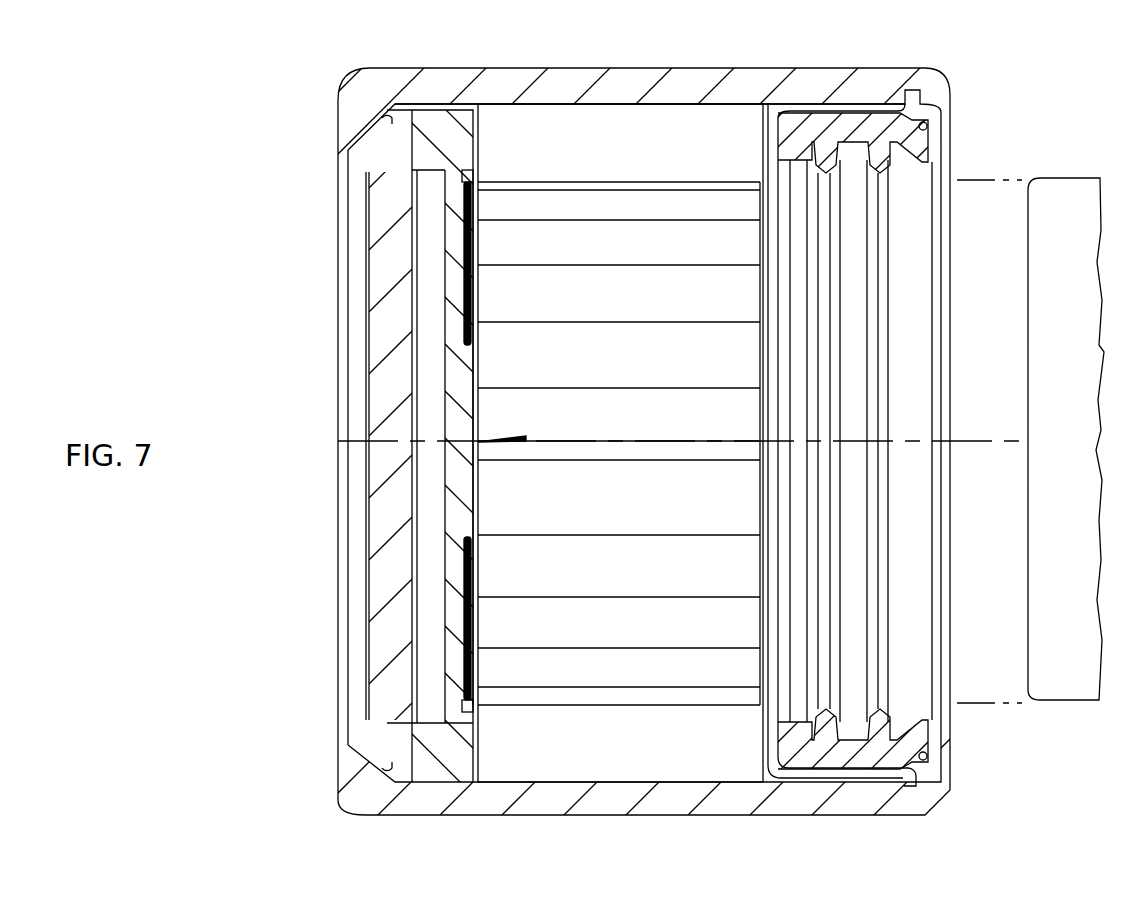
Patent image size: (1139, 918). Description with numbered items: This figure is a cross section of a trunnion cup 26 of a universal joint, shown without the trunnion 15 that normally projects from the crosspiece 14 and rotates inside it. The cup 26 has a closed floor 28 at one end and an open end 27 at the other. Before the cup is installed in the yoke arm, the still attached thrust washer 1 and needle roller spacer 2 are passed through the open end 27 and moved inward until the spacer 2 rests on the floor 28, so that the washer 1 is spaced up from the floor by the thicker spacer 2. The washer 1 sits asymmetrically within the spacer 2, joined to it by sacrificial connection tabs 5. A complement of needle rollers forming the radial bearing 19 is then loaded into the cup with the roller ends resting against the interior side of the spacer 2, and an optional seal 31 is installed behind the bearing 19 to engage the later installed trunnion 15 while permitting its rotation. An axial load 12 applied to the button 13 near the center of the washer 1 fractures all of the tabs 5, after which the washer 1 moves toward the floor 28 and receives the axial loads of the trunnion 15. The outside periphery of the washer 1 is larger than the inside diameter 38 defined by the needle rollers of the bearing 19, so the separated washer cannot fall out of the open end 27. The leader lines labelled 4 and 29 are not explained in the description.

The thrust washer 1 is at (448, 256).
The needle roller spacer 2 is at (430, 123).
The axis 4 is at (338, 441).
The connection tabs 5 is at (474, 171).
The axial load 12 is at (619, 429).
The button 13 is at (458, 368).
The crosspiece 14 is at (410, 378).
The trunnion 15 is at (1058, 178).
The bearing 19 is at (715, 122).
The trunnion cup 26 is at (640, 68).
The open end 27 is at (935, 123).
The closed floor 28 is at (380, 222).
The housing top wall 29 is at (540, 102).
The seal 31 is at (840, 117).
The inside diameter 38 is at (617, 182).